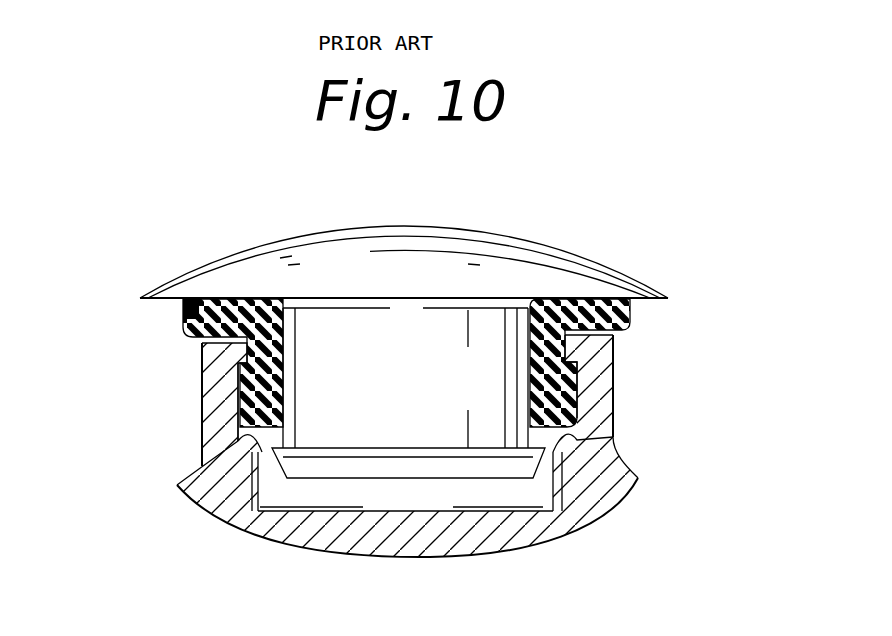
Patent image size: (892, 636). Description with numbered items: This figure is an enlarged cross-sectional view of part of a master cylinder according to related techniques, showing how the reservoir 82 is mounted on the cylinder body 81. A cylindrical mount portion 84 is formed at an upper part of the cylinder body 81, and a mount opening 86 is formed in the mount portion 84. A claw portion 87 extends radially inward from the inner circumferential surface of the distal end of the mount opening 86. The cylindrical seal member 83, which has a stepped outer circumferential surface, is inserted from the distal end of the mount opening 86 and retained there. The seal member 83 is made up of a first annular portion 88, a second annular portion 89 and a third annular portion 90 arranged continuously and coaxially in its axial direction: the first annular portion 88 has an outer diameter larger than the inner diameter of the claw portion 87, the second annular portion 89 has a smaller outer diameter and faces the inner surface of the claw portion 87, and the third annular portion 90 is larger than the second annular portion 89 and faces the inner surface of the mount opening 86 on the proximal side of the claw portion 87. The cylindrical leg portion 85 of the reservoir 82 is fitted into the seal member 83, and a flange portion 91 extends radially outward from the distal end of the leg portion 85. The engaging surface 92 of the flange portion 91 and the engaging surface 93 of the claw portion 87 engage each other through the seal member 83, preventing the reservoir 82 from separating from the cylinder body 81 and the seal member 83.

The cylinder body 81 is at (612, 517).
The reservoir 82 is at (622, 268).
The seal member 83 is at (632, 318).
The mount portion 84 is at (202, 424).
The leg portion 85 is at (497, 393).
The mount opening 86 is at (572, 432).
The claw portion 87 is at (240, 358).
The first annular portion 88 is at (182, 308).
The second annular portion 89 is at (563, 338).
The third annular portion 90 is at (237, 394).
The flange portion 91 is at (540, 466).
The engaging surface 92 is at (202, 456).
The engaging surface 93 is at (578, 372).